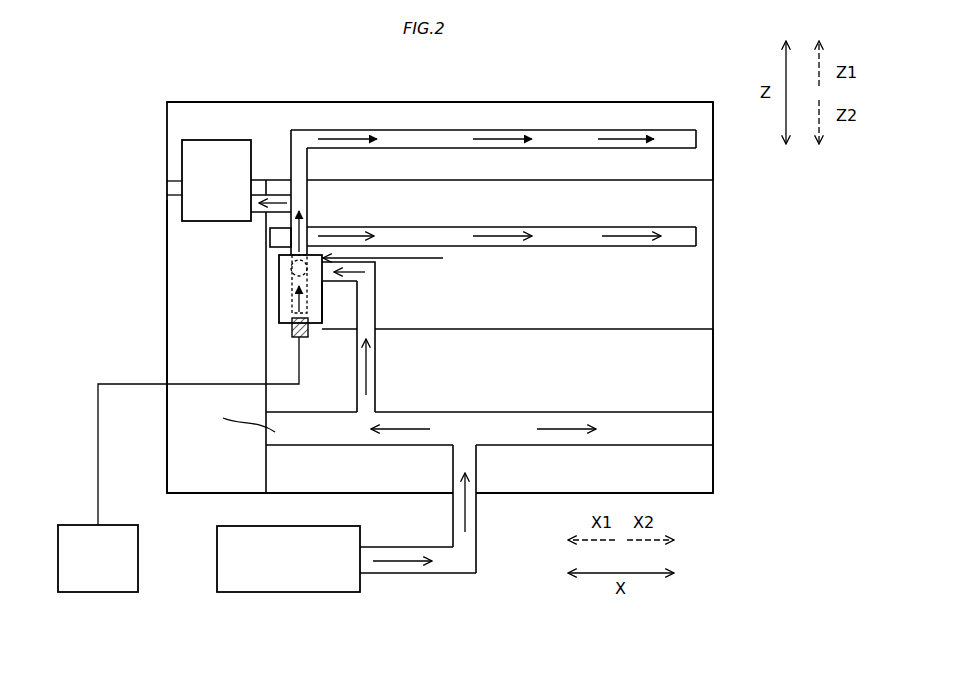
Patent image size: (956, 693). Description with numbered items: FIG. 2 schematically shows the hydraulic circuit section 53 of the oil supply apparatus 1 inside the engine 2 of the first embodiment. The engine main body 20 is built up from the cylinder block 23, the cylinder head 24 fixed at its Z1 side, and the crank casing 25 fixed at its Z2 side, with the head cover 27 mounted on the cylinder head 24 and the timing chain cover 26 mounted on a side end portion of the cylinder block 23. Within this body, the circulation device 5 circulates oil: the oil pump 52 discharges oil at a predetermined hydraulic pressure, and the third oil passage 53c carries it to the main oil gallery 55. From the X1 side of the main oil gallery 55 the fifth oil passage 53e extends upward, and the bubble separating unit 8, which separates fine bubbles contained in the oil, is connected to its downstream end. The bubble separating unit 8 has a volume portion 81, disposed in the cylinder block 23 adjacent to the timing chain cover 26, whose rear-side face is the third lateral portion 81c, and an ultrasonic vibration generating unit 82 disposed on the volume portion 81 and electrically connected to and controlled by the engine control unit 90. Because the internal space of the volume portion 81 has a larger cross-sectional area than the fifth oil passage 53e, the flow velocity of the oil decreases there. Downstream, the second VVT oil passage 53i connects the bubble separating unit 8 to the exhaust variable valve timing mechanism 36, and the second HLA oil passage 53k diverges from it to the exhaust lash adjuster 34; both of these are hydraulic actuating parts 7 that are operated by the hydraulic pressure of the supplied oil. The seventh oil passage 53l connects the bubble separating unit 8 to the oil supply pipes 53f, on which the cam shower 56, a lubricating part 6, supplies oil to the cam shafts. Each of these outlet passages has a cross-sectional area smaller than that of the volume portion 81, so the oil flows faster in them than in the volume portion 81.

The oil supply apparatus 1 is at (673, 115).
The engine 2 is at (577, 95).
The circulation device 5 is at (217, 543).
The lubricating part 6 is at (440, 130).
The hydraulic actuating part 7 is at (213, 140).
The bubble separating unit 8 is at (279, 283).
The engine main body 20 is at (714, 156).
The cylinder block 23 is at (714, 266).
The cylinder head 24 is at (714, 205).
The crank casing 25 is at (714, 391).
The timing chain cover 26 is at (167, 300).
The head cover 27 is at (714, 133).
The exhaust lash adjuster 34 is at (697, 240).
The exhaust variable valve timing mechanism 36 is at (190, 200).
The oil pump 52 is at (217, 569).
The hydraulic circuit section 53 is at (528, 446).
The third oil passage 53c is at (466, 553).
The fifth oil passage 53e is at (366, 310).
The oil supply pipes 53f is at (410, 138).
The second VVT oil passage 53i is at (282, 193).
The second HLA oil passage 53k is at (292, 300).
The seventh oil passage 53l is at (302, 195).
The main oil gallery 55 is at (275, 437).
The cam shower 56 is at (560, 134).
The volume portion 81 is at (322, 282).
The third lateral portion 81c is at (322, 296).
The ultrasonic vibration generating unit 82 is at (308, 336).
The engine control unit 90 is at (77, 525).